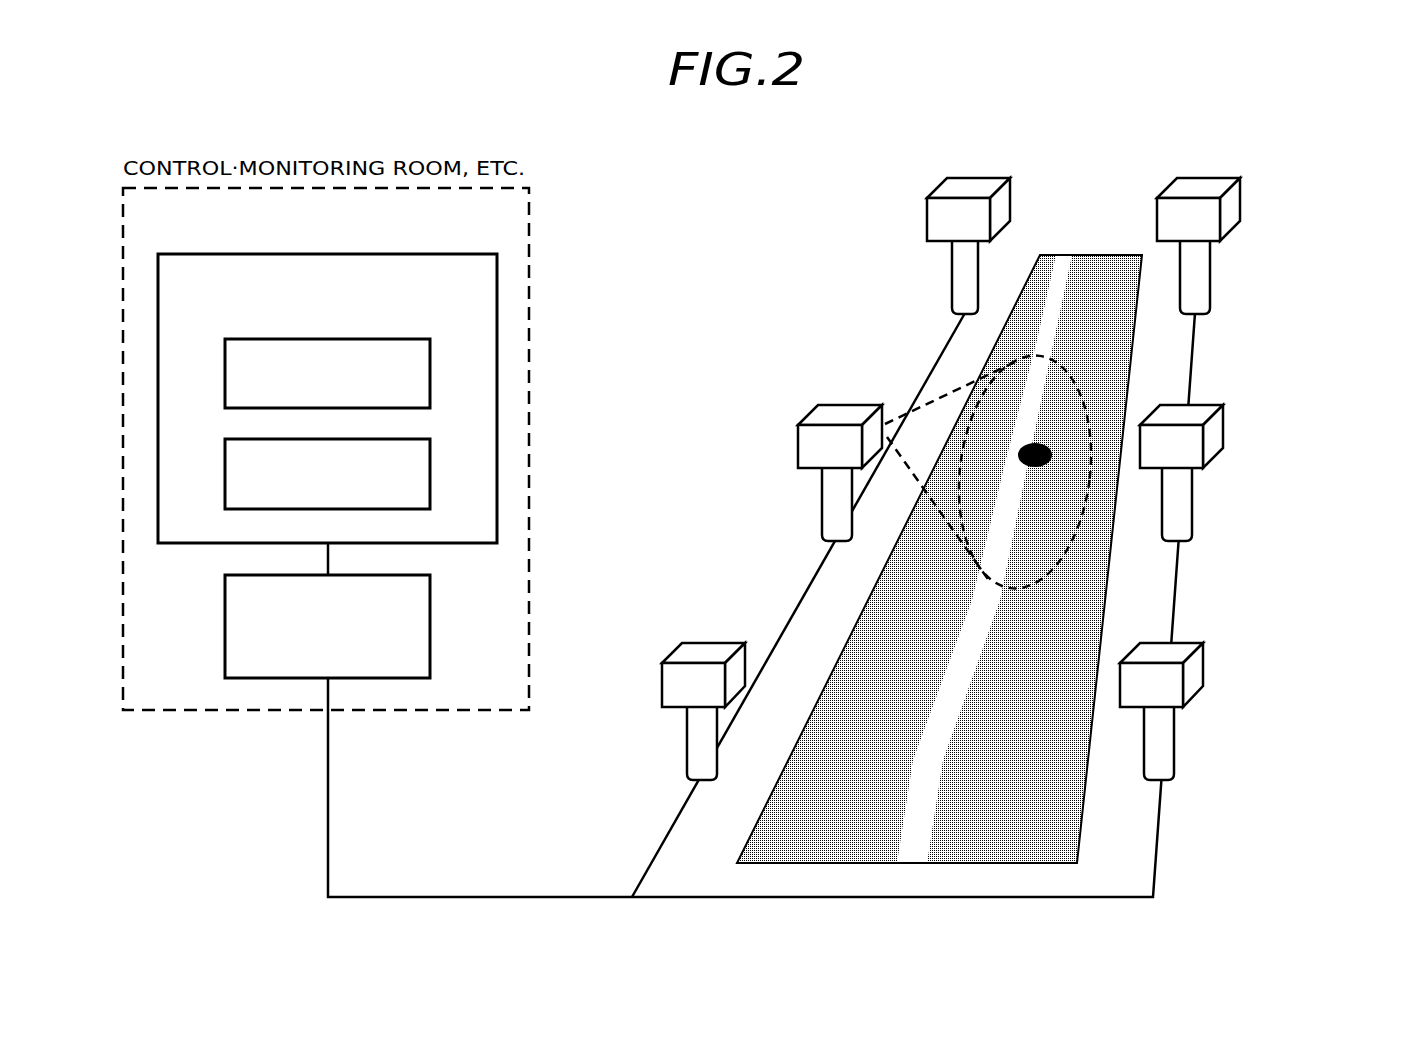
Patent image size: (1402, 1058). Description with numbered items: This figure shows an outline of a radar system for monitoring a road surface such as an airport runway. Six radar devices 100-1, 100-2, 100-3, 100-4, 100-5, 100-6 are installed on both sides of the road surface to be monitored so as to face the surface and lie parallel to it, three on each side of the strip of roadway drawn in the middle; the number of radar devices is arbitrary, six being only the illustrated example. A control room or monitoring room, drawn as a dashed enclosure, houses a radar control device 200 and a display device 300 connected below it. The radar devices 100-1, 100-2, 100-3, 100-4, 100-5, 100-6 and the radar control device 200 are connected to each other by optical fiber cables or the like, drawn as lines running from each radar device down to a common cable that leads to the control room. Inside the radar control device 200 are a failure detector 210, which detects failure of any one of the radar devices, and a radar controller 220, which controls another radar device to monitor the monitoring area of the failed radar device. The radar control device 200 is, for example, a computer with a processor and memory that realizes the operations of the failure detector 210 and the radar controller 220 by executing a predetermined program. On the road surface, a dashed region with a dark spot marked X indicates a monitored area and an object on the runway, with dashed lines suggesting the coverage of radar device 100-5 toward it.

The radar control device 200 is at (383, 253).
The failure detector 210 is at (407, 338).
The radar controller 220 is at (407, 438).
The display device 300 is at (225, 631).
The radar device 100-1 is at (1243, 192).
The radar device 100-2 is at (1223, 421).
The radar device 100-3 is at (1203, 662).
The radar device 100-4 is at (670, 663).
The radar device 100-5 is at (805, 422).
The radar device 100-6 is at (940, 194).
The detection target X is at (1037, 455).